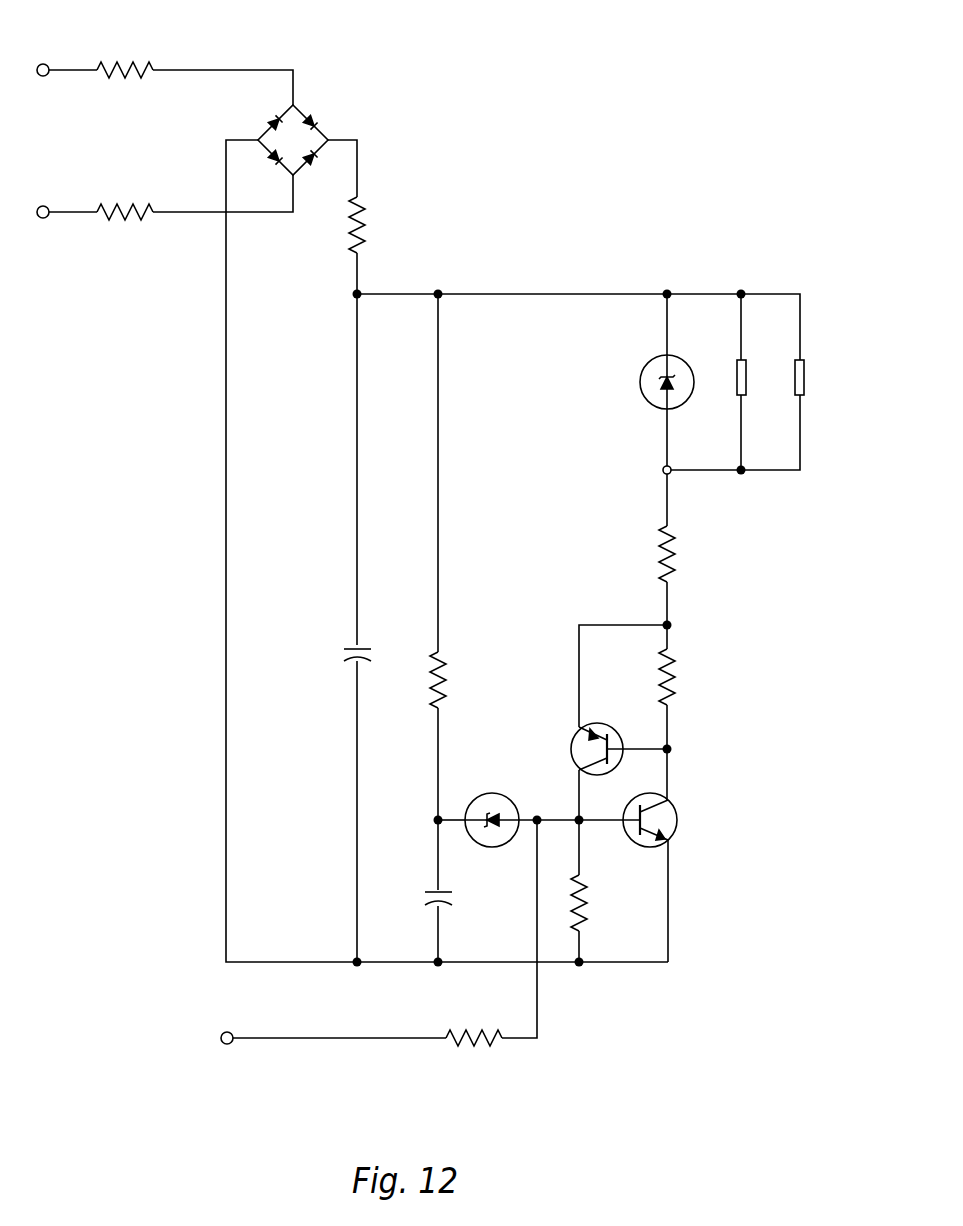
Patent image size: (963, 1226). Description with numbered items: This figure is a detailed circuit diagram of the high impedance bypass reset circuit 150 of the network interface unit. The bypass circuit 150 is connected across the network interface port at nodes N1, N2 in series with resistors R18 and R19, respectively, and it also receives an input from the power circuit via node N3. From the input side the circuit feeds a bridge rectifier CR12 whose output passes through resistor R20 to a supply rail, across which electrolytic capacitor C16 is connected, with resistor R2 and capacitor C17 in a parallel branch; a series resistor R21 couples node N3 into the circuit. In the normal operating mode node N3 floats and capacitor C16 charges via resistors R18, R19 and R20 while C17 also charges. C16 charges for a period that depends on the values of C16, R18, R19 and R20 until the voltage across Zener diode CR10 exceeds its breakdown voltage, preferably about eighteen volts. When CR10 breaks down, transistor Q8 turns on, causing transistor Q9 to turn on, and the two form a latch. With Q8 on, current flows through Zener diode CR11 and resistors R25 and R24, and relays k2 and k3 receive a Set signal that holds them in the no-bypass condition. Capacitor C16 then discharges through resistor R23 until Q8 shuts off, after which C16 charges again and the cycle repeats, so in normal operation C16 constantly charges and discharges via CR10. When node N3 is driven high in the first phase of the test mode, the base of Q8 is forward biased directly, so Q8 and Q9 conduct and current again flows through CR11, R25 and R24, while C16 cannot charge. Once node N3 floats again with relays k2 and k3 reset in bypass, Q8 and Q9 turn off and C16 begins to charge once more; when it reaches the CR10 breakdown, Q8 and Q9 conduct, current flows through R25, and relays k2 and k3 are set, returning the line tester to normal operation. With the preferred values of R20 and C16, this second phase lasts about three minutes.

The high impedance bypass reset circuit 150 is at (608, 48).
The node N1 is at (45, 63).
The node N2 is at (45, 205).
The node N3 is at (295, 1040).
The resistor R18 is at (125, 56).
The resistor R19 is at (125, 198).
The resistor R20 is at (372, 225).
The resistor R21 is at (474, 1022).
The resistor R2 is at (425, 680).
The resistor R23 is at (595, 903).
The resistor R24 is at (684, 677).
The resistor R25 is at (651, 554).
The bridge rectifier CR12 is at (303, 139).
The Zener diode CR11 is at (648, 382).
The Zener diode CR10 is at (492, 822).
The capacitor C16 is at (362, 641).
The capacitor C17 is at (422, 888).
The transistor Q9 is at (577, 738).
The transistor Q8 is at (685, 836).
The relay k2 is at (748, 377).
The relay k3 is at (804, 384).